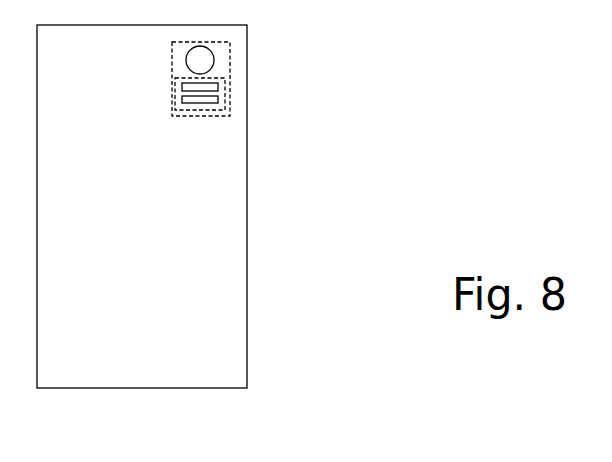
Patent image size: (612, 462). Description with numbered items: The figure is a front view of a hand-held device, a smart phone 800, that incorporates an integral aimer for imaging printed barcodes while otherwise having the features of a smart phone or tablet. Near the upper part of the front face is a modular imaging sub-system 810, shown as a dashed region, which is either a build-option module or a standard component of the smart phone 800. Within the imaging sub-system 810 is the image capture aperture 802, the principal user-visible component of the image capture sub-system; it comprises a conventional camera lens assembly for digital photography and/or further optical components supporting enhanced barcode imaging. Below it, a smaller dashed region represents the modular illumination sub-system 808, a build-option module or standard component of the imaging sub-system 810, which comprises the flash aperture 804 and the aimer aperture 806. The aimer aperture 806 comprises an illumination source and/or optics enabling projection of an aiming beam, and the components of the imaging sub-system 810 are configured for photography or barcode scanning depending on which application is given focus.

The smart phone 800 is at (103, 370).
The image capture aperture 802 is at (214, 60).
The flash aperture 804 is at (218, 87).
The aimer aperture 806 is at (218, 99).
The modular illumination sub-system 808 is at (220, 110).
The modular imaging sub-system 810 is at (220, 41).